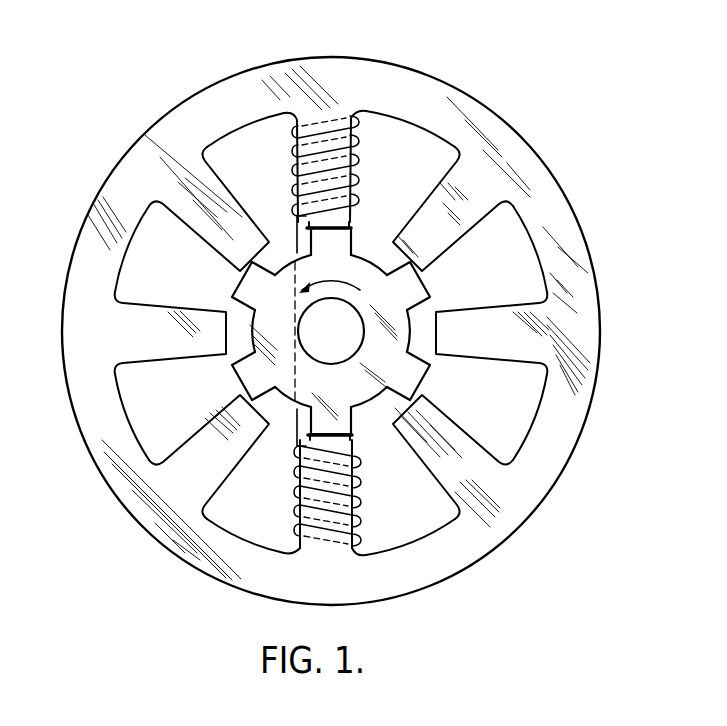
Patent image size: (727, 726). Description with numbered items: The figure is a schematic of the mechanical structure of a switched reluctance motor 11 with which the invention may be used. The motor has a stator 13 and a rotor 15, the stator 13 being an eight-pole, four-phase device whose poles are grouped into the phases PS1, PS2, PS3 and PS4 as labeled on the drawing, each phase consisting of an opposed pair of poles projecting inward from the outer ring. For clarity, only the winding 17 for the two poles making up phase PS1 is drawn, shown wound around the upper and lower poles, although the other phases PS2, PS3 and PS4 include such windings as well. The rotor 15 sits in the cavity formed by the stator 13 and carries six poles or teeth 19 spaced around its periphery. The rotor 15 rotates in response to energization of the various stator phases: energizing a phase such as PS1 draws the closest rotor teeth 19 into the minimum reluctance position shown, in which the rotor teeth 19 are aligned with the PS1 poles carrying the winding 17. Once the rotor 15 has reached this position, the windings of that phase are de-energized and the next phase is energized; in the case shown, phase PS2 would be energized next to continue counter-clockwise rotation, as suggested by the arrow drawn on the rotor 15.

The switched reluctance motor 11 is at (121, 122).
The stator 13 is at (339, 323).
The rotor 15 is at (289, 323).
The winding 17 is at (363, 174).
The rotor poles or teeth 19 is at (355, 240).
The phase PS1 is at (295, 148).
The phase PS2 is at (454, 167).
The phase PS3 is at (165, 263).
The phase PS4 is at (270, 177).